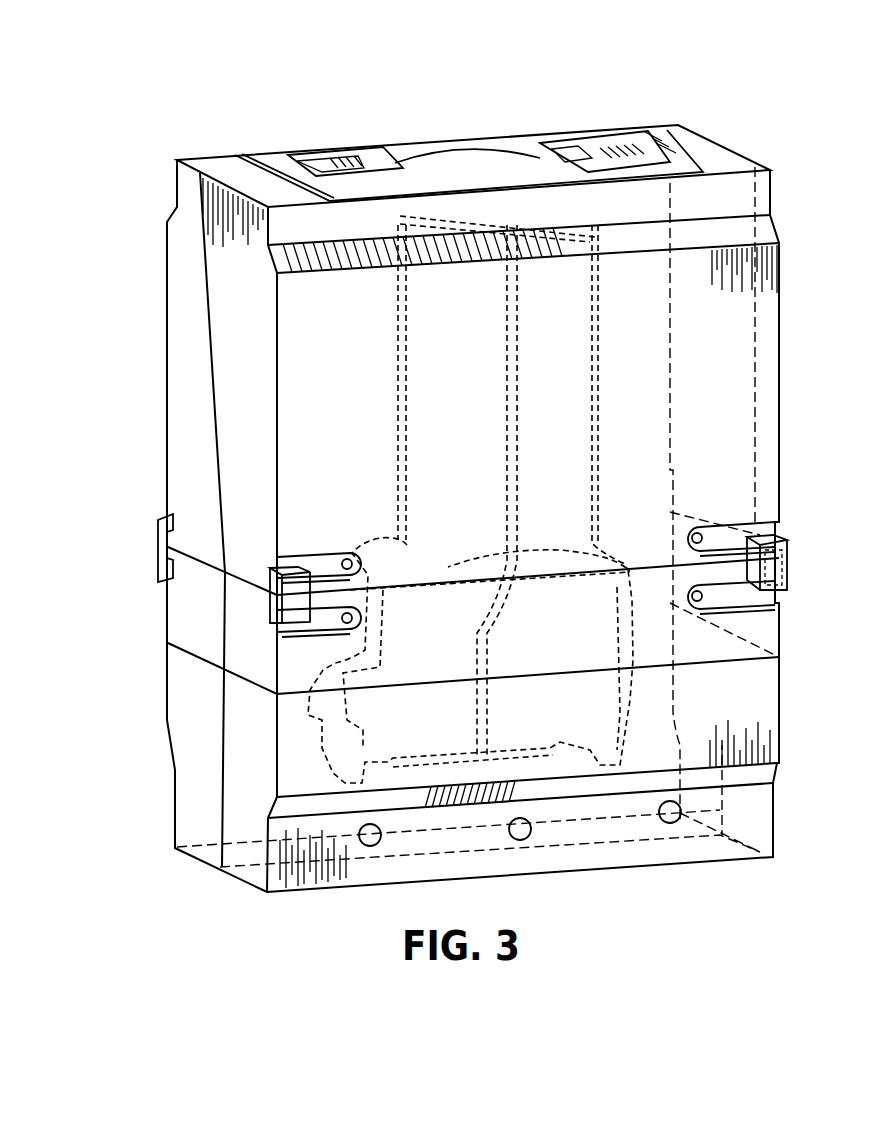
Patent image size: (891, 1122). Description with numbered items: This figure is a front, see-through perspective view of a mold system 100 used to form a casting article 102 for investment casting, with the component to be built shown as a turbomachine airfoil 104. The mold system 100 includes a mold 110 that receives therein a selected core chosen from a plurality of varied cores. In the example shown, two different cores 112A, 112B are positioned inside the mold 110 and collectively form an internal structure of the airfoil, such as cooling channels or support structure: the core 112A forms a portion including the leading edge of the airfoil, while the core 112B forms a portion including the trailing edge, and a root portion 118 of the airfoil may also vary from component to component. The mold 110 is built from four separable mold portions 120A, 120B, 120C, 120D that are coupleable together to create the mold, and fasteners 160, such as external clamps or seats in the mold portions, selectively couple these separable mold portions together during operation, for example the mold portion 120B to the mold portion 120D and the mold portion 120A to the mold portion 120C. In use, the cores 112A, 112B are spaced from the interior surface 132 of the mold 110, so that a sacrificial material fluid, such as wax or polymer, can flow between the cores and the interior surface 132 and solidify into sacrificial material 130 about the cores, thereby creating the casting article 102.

The mold system 100 is at (762, 150).
The casting article 102 is at (476, 172).
The turbomachine airfoil 104 is at (600, 498).
The mold 110 is at (760, 323).
The core 112A is at (398, 225).
The core 112B is at (557, 262).
The root portion 118 is at (549, 718).
The separable mold portion 120A is at (197, 829).
The separable mold portion 120B is at (252, 856).
The separable mold portion 120C is at (195, 367).
The separable mold portion 120D is at (747, 383).
The sacrificial material 130 is at (403, 325).
The interior surface 132 is at (597, 402).
The fastener 160 is at (157, 527).